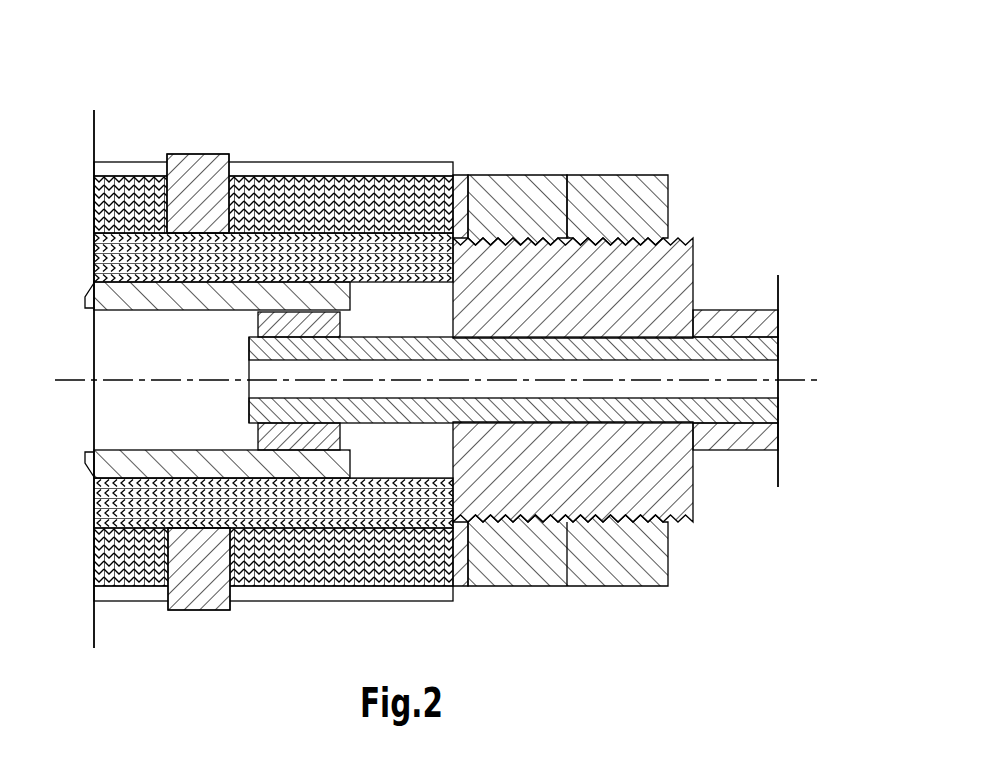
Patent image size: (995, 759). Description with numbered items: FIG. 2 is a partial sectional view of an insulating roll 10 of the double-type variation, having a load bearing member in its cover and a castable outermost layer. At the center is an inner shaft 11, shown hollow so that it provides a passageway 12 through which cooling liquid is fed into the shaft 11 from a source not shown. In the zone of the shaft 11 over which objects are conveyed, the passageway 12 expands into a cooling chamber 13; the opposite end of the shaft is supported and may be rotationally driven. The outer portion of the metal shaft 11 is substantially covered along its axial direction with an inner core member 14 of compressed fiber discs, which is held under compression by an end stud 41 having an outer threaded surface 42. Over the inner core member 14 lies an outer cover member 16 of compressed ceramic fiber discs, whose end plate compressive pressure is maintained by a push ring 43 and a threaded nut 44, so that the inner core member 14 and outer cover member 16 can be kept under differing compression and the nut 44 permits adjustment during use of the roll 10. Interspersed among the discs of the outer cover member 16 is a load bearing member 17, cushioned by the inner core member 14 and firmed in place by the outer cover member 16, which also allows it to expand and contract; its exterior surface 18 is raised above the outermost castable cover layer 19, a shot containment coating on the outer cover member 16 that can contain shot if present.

The roll 10 is at (385, 96).
The inner shaft 11 is at (772, 412).
The passageway 12 is at (776, 366).
The cooling chamber 13 is at (130, 358).
The inner core member 14 is at (115, 500).
The outer cover member 16 is at (96, 205).
The load bearing member 17 is at (195, 151).
The exterior surface 18 is at (198, 606).
The outermost castable cover layer 19 is at (370, 595).
The end stud 41 is at (690, 283).
The outer threaded surface 42 is at (676, 527).
The push ring 43 is at (462, 176).
The threaded nut 44 is at (619, 185).